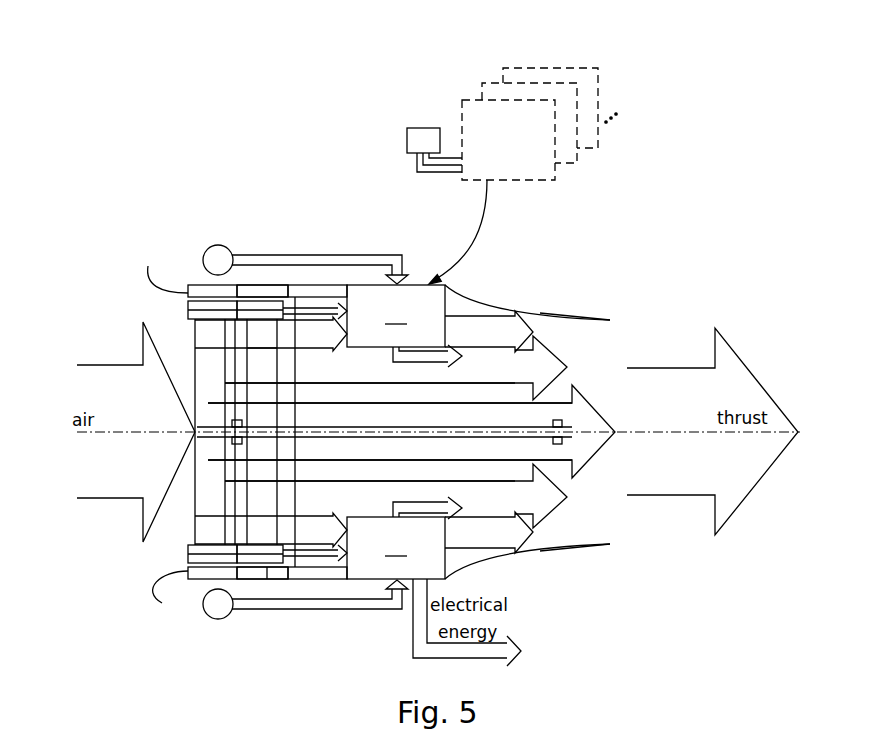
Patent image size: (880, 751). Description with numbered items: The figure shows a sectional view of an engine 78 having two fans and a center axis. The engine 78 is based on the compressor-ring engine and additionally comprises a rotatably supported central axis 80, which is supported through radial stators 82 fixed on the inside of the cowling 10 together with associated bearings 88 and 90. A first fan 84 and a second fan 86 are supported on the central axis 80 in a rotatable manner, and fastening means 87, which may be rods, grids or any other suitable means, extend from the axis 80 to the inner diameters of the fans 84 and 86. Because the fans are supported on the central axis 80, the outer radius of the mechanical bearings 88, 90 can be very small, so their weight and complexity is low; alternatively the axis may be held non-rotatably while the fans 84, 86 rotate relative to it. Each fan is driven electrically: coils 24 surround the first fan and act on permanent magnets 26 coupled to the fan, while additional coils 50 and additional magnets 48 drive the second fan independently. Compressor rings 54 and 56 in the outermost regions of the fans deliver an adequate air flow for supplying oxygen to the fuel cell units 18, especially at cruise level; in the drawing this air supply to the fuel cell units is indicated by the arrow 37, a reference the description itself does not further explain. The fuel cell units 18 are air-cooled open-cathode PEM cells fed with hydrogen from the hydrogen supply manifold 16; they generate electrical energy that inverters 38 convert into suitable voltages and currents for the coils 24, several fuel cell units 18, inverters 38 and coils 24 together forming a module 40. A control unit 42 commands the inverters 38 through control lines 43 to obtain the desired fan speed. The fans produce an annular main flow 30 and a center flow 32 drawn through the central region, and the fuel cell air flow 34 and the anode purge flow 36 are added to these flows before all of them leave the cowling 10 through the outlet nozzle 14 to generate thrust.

The cowling 10 is at (148, 268).
The outlet nozzle 14 is at (583, 318).
The hydrogen supply manifold 16 is at (224, 247).
The fuel cell units 18 is at (396, 432).
The coils 24 is at (195, 284).
The permanent magnets 26 is at (188, 299).
The main flow 30 is at (567, 367).
The center flow 32 is at (603, 447).
The fuel cell air flow 34 is at (515, 333).
The anode purge flow 36 is at (447, 356).
The air supply to fuel cell 37 is at (333, 322).
The inverters 38 is at (325, 290).
The module 40 is at (468, 108).
The control unit 42 is at (420, 137).
The control lines 43 is at (452, 157).
The additional magnets 48 is at (257, 302).
The additional coils 50 is at (245, 290).
The compressor ring 54 is at (188, 307).
The compressor ring 56 is at (270, 308).
The engine 78 is at (647, 266).
The central axis 80 is at (357, 427).
The radial stators 82 is at (235, 375).
The first fan 84 is at (210, 432).
The second fan 86 is at (262, 339).
The fastening means 87 is at (295, 403).
The bearing 88 is at (247, 422).
The bearing 90 is at (612, 432).